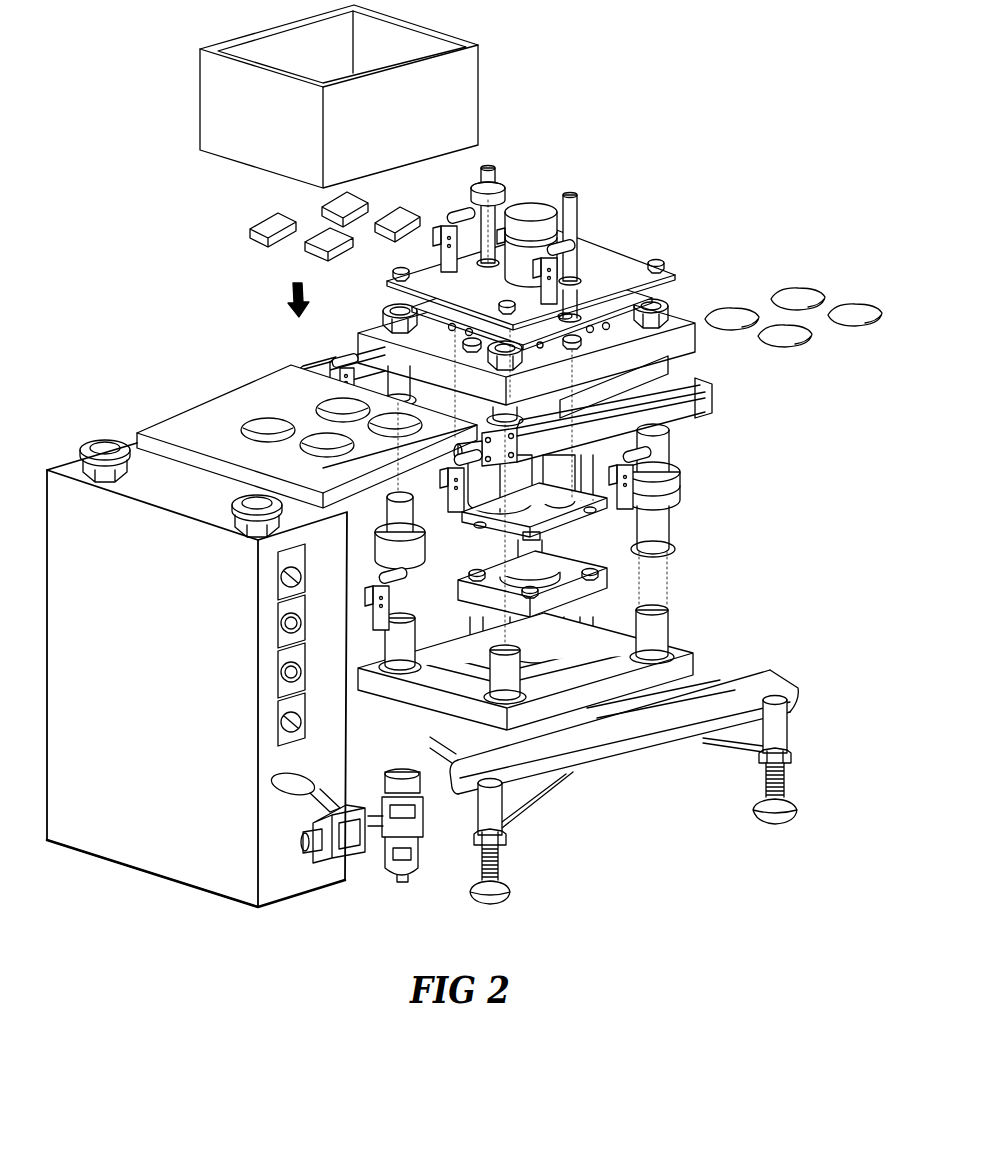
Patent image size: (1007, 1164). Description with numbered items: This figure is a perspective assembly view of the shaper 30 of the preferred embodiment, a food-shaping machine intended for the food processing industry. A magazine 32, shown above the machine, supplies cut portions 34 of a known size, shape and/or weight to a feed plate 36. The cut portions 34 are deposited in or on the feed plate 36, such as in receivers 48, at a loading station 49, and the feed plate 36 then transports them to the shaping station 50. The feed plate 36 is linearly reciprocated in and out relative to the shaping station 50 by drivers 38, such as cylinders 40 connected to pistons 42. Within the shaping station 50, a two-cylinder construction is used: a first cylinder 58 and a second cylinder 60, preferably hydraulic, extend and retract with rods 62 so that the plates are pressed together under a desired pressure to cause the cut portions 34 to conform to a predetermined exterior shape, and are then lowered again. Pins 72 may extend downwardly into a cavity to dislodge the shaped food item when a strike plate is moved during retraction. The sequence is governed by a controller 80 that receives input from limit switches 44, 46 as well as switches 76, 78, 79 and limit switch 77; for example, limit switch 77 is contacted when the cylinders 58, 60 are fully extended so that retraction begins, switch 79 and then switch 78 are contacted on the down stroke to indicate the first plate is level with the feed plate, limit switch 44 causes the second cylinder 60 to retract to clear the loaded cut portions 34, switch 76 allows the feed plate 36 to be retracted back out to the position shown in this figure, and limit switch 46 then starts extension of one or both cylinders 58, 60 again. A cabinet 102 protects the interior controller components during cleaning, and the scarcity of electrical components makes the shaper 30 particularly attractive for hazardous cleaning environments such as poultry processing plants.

The shaper 30 is at (638, 137).
The magazine 32 is at (228, 131).
The cut portions 34 is at (249, 233).
The feed plate 36 is at (156, 426).
The drivers 38 is at (292, 357).
The cylinders 40 is at (338, 357).
The pistons 42 is at (262, 398).
The limit switch 44 is at (443, 476).
The limit switch 46 is at (420, 541).
The receivers 48 is at (256, 431).
The loading station 49 is at (188, 313).
The shaping station 50 is at (626, 383).
The first cylinder 58 is at (576, 527).
The second cylinder 60 is at (604, 609).
The rods 62 is at (542, 543).
The pins 72 is at (323, 298).
The switch 76 is at (400, 583).
The limit switch 77 is at (575, 266).
The switch 78 is at (672, 479).
The switch 79 is at (458, 213).
The controller 80 is at (287, 877).
The cabinet 102 is at (160, 655).